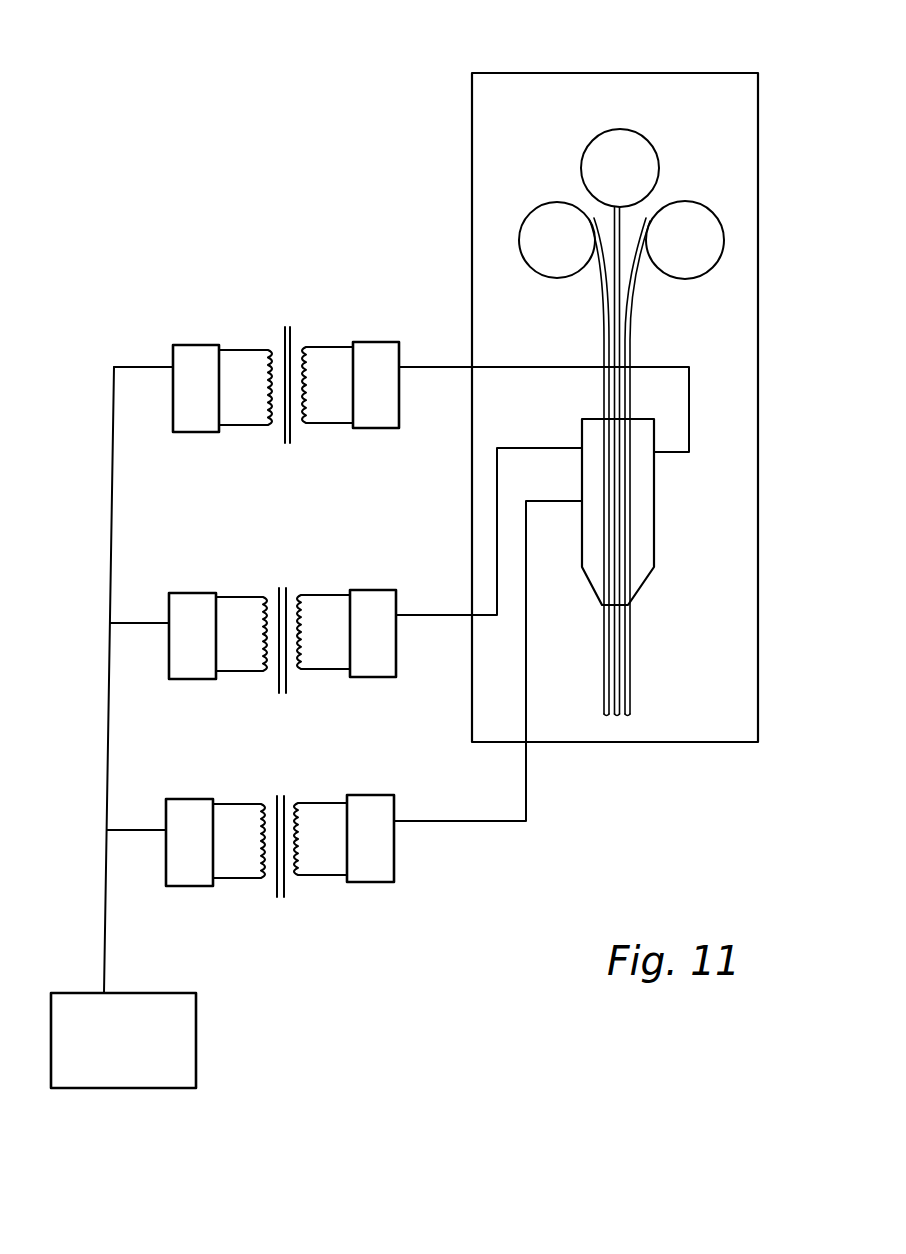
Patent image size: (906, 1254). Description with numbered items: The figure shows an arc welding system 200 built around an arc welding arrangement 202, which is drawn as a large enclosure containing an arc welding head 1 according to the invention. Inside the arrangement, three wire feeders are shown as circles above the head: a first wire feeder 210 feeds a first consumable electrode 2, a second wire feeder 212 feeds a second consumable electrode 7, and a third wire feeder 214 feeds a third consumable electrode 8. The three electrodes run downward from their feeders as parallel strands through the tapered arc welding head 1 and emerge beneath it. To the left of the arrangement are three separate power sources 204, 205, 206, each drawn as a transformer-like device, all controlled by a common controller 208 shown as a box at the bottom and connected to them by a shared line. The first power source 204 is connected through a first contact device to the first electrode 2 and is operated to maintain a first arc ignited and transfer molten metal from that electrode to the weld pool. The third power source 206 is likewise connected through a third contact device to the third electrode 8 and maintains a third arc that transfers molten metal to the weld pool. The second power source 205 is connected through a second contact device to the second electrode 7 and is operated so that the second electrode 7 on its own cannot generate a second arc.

The arc welding system 200 is at (717, 782).
The arc welding arrangement 202 is at (762, 473).
The second wire feeder 212 is at (624, 135).
The first wire feeder 210 is at (548, 214).
The third wire feeder 214 is at (682, 212).
The arc welding head 1 is at (665, 500).
The first consumable electrode 2 is at (603, 695).
The second consumable electrode 7 is at (615, 715).
The third consumable electrode 8 is at (628, 700).
The first power source 204 is at (308, 288).
The second power source 205 is at (300, 548).
The third power source 206 is at (317, 778).
The controller 208 is at (240, 1019).